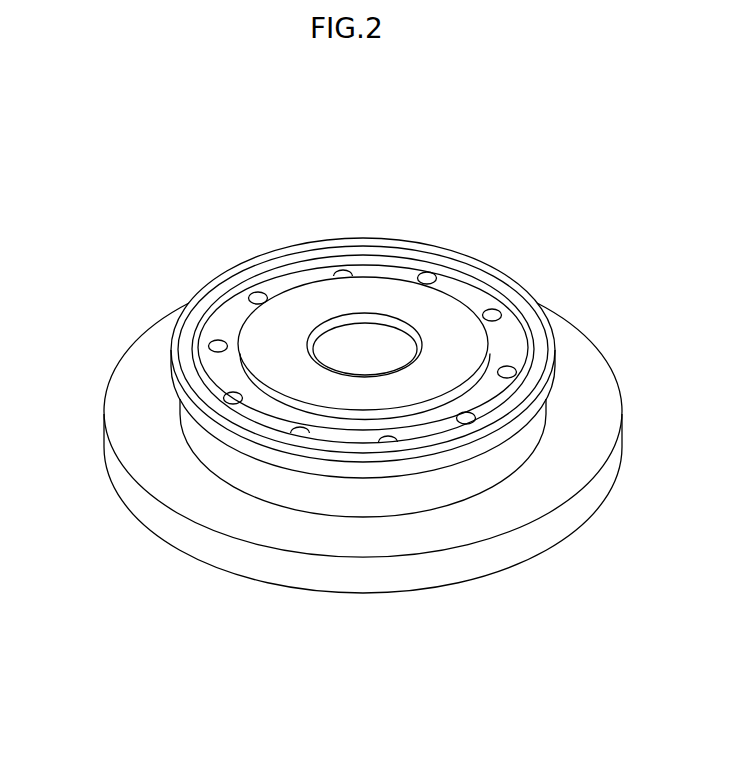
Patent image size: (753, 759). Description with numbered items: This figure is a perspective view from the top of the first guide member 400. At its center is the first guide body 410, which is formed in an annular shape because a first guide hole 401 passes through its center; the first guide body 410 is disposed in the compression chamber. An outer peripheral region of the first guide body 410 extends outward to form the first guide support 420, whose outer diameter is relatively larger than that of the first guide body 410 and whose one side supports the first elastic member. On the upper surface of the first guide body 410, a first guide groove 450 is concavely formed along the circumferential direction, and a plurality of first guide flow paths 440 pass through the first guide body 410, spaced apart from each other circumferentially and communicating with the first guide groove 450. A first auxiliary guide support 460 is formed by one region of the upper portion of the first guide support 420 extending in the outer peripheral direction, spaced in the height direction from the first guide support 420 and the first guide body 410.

The first guide member 400 is at (80, 142).
The first guide hole 401 is at (366, 344).
The first guide body 410 is at (207, 443).
The first guide support 420 is at (137, 388).
The first guide flow paths 440 is at (258, 297).
The first guide groove 450 is at (303, 277).
The first auxiliary guide support 460 is at (545, 383).